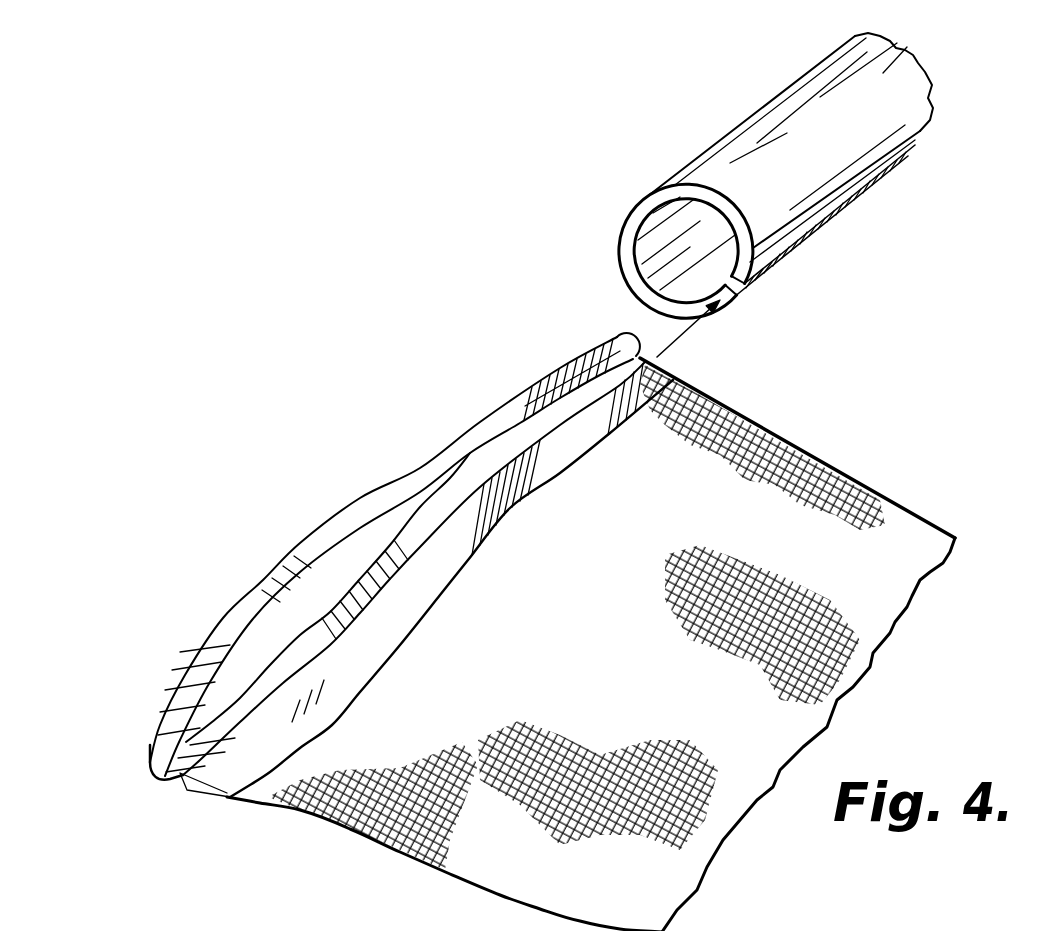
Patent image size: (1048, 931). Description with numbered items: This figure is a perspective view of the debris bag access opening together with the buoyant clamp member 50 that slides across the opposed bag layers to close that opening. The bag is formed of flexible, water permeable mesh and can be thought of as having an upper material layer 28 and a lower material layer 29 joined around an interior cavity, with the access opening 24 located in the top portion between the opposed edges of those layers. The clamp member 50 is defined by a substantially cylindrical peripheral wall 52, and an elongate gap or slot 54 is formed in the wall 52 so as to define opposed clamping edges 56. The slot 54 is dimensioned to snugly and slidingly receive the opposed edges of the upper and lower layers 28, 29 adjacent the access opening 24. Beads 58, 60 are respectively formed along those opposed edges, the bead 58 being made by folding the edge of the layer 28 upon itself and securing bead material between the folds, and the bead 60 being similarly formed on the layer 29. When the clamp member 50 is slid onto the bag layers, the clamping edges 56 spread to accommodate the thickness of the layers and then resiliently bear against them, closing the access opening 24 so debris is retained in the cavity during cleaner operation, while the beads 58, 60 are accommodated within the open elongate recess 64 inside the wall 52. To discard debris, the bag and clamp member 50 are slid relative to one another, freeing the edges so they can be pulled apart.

The access opening 24 is at (148, 764).
The upper material layer 28 is at (780, 432).
The lower material layer 29 is at (333, 827).
The clamp member 50 is at (729, 195).
The cylindrical peripheral wall 52 is at (617, 240).
The slot 54 is at (742, 287).
The clamping edges 56 is at (880, 177).
The bead 58 is at (227, 793).
The bead 60 is at (263, 579).
The open elongate recess 64 is at (630, 292).